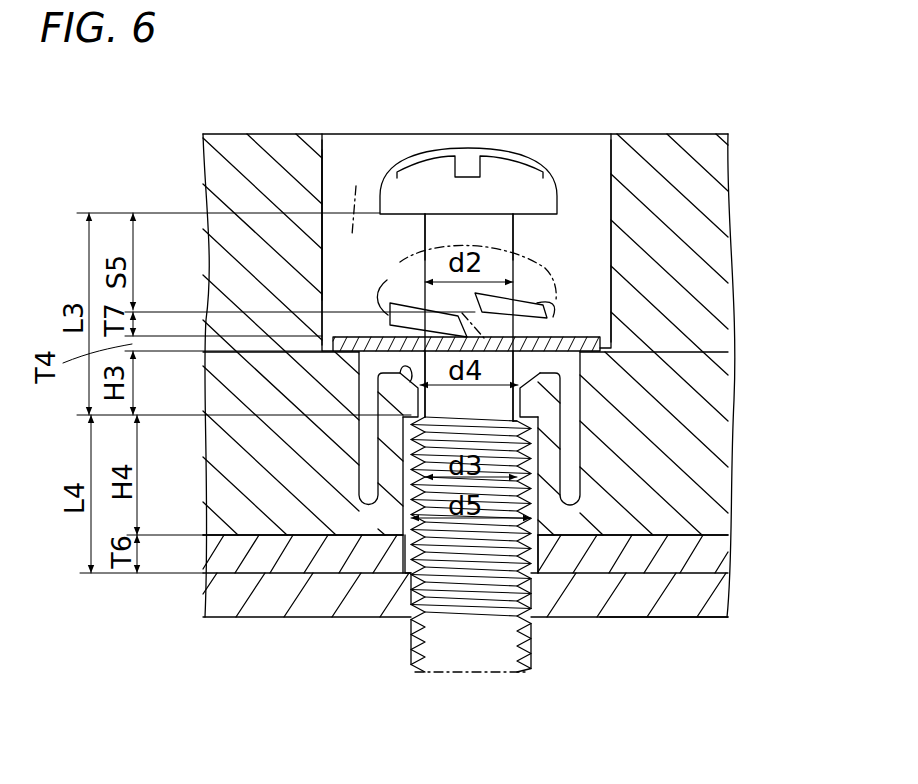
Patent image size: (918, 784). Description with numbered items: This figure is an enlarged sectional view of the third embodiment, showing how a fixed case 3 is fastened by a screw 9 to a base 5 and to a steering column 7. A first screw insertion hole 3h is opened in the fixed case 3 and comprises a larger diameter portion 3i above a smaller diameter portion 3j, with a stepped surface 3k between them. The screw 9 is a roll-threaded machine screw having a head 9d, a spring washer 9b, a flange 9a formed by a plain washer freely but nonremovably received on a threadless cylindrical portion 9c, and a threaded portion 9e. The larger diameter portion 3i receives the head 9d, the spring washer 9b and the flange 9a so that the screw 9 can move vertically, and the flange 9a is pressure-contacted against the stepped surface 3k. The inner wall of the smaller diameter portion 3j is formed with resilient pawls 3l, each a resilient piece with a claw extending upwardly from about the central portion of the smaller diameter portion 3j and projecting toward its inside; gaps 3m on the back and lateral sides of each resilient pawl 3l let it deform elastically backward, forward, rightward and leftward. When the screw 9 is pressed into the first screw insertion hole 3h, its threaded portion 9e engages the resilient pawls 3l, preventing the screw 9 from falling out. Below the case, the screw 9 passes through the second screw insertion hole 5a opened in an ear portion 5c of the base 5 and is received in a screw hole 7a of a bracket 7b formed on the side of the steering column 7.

The fixed case 3 is at (649, 127).
The first screw insertion hole 3h is at (611, 138).
The larger diameter portion 3i is at (323, 166).
The smaller diameter portion 3j is at (372, 410).
The stepped surface 3k is at (604, 347).
The resilient pawl 3l is at (398, 382).
The gap 3m is at (362, 487).
The base 5 is at (738, 570).
The second screw insertion hole 5a is at (545, 548).
The ear portion 5c is at (705, 535).
The steering column 7 is at (551, 622).
The screw hole 7a is at (403, 606).
The bracket 7b is at (707, 620).
The screw 9 is at (505, 148).
The flange 9a is at (560, 354).
The spring washer 9b is at (557, 294).
The threadless cylindrical portion 9c is at (506, 233).
The head 9d is at (387, 280).
The threaded portion 9e is at (573, 619).